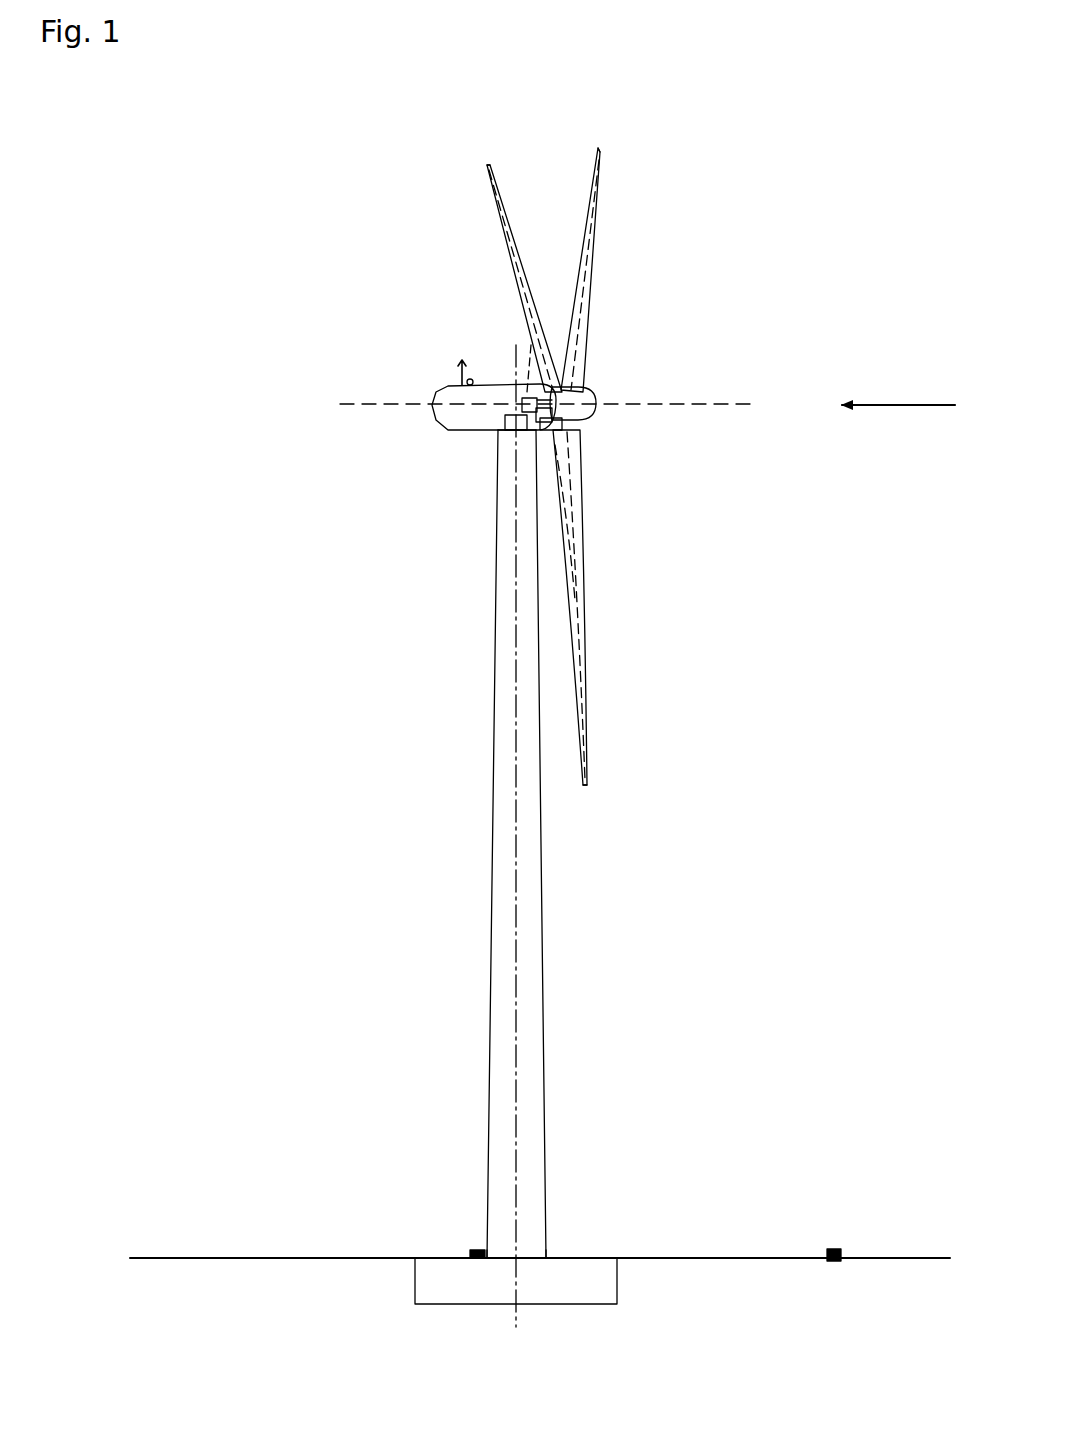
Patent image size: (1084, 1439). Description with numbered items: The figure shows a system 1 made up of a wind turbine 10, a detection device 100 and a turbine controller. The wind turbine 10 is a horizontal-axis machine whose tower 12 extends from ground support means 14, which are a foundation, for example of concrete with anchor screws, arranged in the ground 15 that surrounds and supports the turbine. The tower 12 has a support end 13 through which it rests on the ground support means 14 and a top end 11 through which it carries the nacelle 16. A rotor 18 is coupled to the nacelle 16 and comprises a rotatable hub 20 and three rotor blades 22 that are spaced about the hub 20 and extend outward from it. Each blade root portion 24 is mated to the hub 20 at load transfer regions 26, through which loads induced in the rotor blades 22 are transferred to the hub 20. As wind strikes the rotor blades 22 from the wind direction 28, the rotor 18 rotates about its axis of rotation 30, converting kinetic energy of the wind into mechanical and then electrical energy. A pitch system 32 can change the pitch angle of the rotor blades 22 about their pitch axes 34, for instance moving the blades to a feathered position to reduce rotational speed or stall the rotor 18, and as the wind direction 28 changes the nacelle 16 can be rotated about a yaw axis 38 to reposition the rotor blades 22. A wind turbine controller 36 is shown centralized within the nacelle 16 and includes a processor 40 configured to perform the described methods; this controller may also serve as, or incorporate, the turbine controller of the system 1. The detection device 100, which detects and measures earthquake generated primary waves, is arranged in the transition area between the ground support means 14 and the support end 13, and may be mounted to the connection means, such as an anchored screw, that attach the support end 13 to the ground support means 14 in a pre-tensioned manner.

The system 1 is at (892, 79).
The wind turbine 10 is at (254, 168).
The top end 11 is at (505, 440).
The tower 12 is at (487, 1010).
The support end 13 is at (543, 1240).
The ground support means 14 is at (440, 1275).
The ground 15 is at (165, 1256).
The nacelle 16 is at (445, 416).
The rotor 18 is at (602, 300).
The rotatable hub 20 is at (590, 398).
The rotor blade 22 is at (508, 240).
The blade root portion 24 is at (580, 520).
The load transfer regions 26 is at (575, 432).
The wind direction 28 is at (918, 404).
The axis of rotation 30 is at (665, 405).
The pitch system 32 is at (565, 456).
The pitch axes 34 is at (486, 168).
The wind turbine controller 36 is at (512, 458).
The yaw axis 38 is at (520, 890).
The processor 40 is at (528, 346).
The detection device 100 is at (478, 1250).